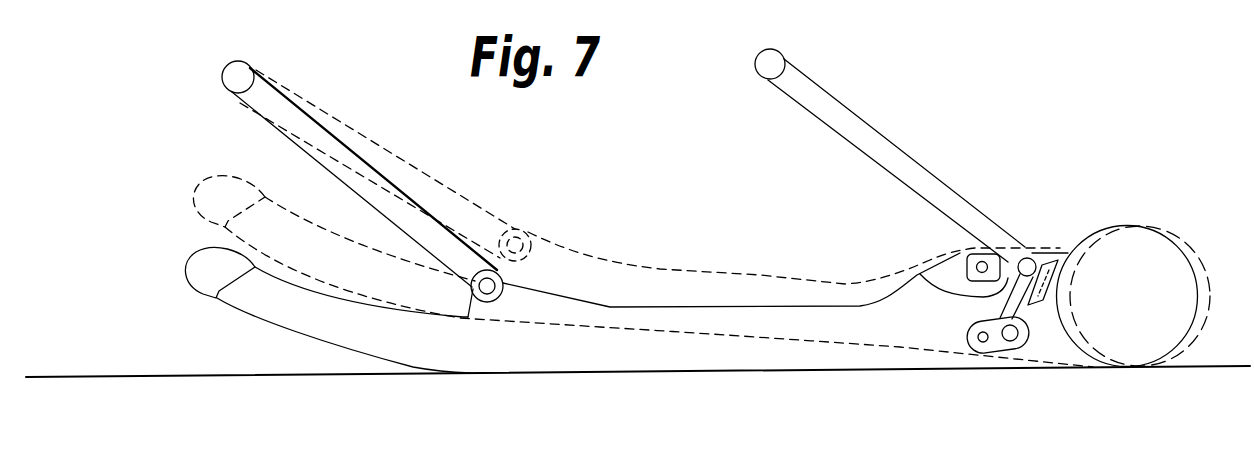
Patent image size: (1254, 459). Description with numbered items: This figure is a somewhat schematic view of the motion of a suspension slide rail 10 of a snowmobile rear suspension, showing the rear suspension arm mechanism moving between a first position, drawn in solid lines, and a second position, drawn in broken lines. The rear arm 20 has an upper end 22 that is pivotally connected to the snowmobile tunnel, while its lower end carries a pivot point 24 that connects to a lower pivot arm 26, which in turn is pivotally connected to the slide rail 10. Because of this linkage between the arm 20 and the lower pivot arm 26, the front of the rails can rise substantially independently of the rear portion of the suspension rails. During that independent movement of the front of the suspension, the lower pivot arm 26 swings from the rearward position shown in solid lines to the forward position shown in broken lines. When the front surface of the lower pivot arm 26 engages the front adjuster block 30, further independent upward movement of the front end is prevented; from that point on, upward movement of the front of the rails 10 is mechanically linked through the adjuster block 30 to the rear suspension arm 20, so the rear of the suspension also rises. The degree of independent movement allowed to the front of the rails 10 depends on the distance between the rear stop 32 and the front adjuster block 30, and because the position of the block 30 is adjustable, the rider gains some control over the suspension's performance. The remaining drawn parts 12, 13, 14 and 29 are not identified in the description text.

The slide rail 10 is at (346, 340).
The steering bar 12 is at (343, 143).
The handle grip 13 is at (245, 72).
The pivot 14 is at (503, 290).
The rear suspension arm 20 is at (882, 138).
The upper end of the rear arm 22 is at (772, 63).
The pivot point 24 is at (1032, 256).
The lower pivot arm 26 is at (967, 267).
The link plate 29 is at (1012, 340).
The front adjuster block 30 is at (952, 291).
The rear stop 32 is at (1066, 258).